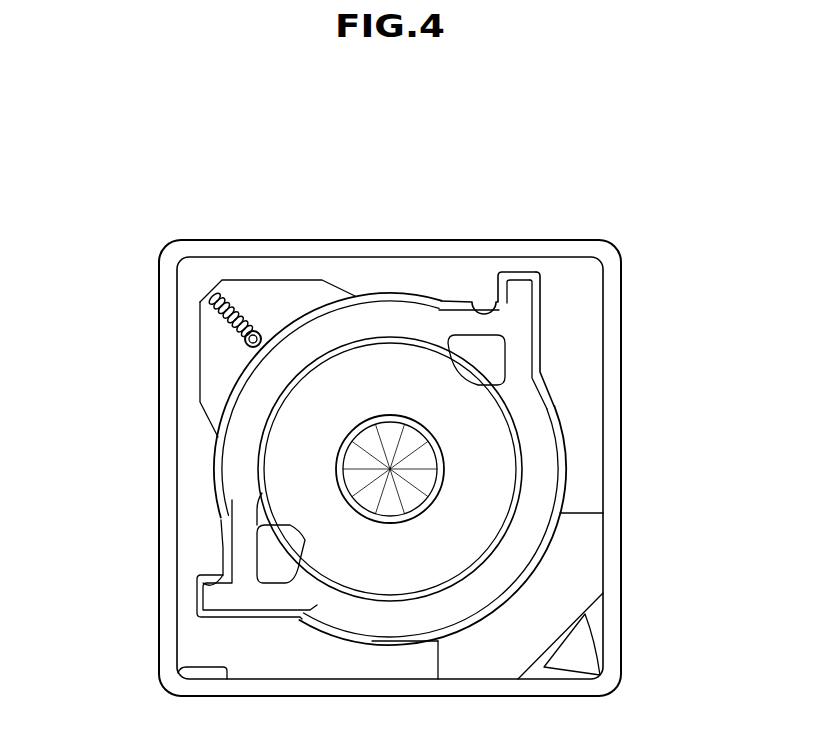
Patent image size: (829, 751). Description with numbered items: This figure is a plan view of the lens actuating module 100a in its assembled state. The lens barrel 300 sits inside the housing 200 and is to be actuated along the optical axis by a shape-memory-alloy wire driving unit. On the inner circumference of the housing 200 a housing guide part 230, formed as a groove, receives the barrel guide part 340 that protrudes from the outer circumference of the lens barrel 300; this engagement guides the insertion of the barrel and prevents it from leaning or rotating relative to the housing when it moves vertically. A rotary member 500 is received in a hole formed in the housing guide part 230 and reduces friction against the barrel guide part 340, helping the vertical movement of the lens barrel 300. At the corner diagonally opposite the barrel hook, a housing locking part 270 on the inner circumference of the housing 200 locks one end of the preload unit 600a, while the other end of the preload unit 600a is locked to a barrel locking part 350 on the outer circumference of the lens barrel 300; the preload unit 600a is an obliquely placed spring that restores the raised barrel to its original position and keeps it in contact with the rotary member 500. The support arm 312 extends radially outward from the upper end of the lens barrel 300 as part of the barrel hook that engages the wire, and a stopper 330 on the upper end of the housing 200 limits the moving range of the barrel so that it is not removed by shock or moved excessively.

The lens actuating module 100a is at (150, 118).
The housing 200 is at (608, 398).
The housing guide part 230 is at (516, 278).
The housing locking part 270 is at (230, 292).
The lens barrel 300 is at (385, 358).
The support arm 312 is at (580, 650).
The stopper 330 is at (578, 563).
The barrel guide part 340 is at (522, 297).
The barrel locking part 350 is at (250, 351).
The rotary member 500 is at (499, 283).
The preload unit 600a is at (252, 312).